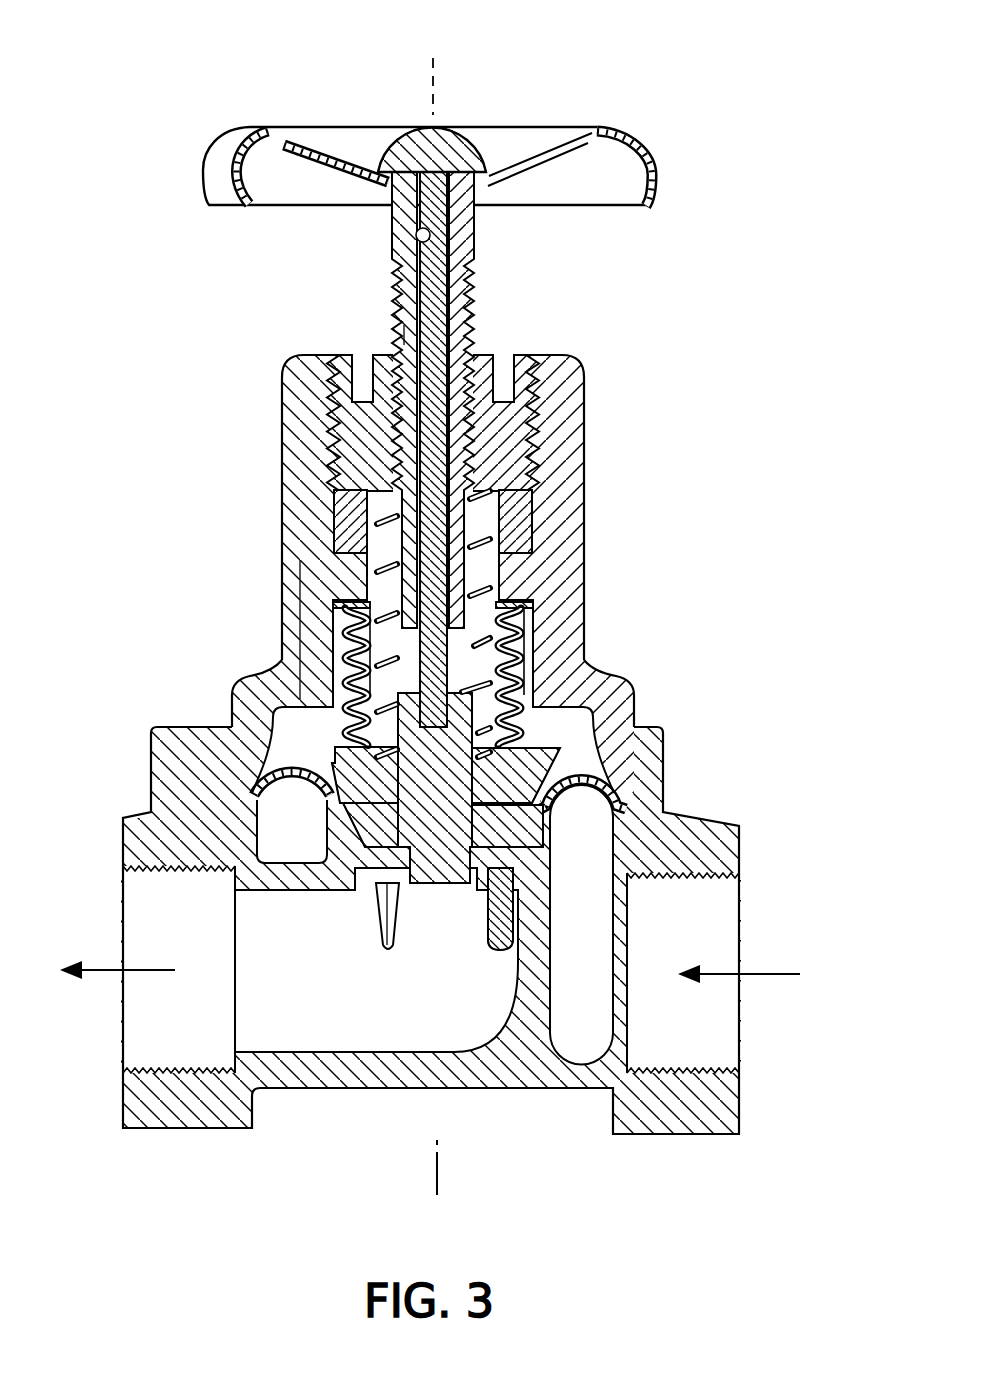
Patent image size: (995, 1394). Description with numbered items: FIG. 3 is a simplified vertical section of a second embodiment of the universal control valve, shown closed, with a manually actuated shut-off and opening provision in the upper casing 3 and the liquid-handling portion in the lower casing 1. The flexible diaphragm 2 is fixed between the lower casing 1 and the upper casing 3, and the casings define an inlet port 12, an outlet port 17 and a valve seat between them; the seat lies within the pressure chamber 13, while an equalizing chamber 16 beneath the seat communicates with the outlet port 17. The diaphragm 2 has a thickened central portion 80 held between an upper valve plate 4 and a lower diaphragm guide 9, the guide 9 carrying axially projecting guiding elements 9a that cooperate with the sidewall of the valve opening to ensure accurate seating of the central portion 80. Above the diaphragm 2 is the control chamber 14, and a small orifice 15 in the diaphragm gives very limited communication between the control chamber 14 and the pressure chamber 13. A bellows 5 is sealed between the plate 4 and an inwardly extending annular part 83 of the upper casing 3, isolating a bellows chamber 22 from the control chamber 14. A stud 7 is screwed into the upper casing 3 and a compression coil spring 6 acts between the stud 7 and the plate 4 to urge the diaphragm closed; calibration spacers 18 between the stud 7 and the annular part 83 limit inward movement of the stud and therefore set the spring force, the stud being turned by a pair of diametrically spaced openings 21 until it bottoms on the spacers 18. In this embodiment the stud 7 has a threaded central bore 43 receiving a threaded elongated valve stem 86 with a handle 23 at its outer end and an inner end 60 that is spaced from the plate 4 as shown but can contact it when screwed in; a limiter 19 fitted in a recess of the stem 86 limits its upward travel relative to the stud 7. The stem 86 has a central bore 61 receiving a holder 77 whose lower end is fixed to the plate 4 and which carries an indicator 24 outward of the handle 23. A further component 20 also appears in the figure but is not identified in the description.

The lower casing 1 is at (682, 848).
The flexible diaphragm 2 is at (600, 785).
The upper casing 3 is at (550, 678).
The upper valve plate 4 is at (335, 758).
The bellows 5 is at (530, 610).
The compression coil spring 6 is at (482, 595).
The stud 7 is at (362, 450).
The lower diaphragm guide 9 is at (490, 875).
The guiding elements 9a is at (383, 936).
The inlet port 12 is at (700, 913).
The pressure chamber 13 is at (580, 824).
The control chamber 14 is at (633, 693).
The orifice 15 is at (290, 735).
The equalizing chamber 16 is at (452, 1014).
The outlet port 17 is at (155, 900).
The calibration spacers 18 is at (505, 496).
The limiter 19 is at (358, 503).
The bonnet 20 is at (530, 440).
The openings 21 is at (501, 372).
The bellows chamber 22 is at (377, 635).
The handle 23 is at (612, 178).
The indicator 24 is at (445, 154).
The threaded central bore 43 is at (402, 336).
The inner end 60 is at (462, 652).
The central bore 61 is at (424, 236).
The holder 77 is at (448, 293).
The thickened central portion 80 is at (332, 826).
The inwardly extending annular part 83 is at (350, 578).
The threaded elongated valve stem 86 is at (402, 285).